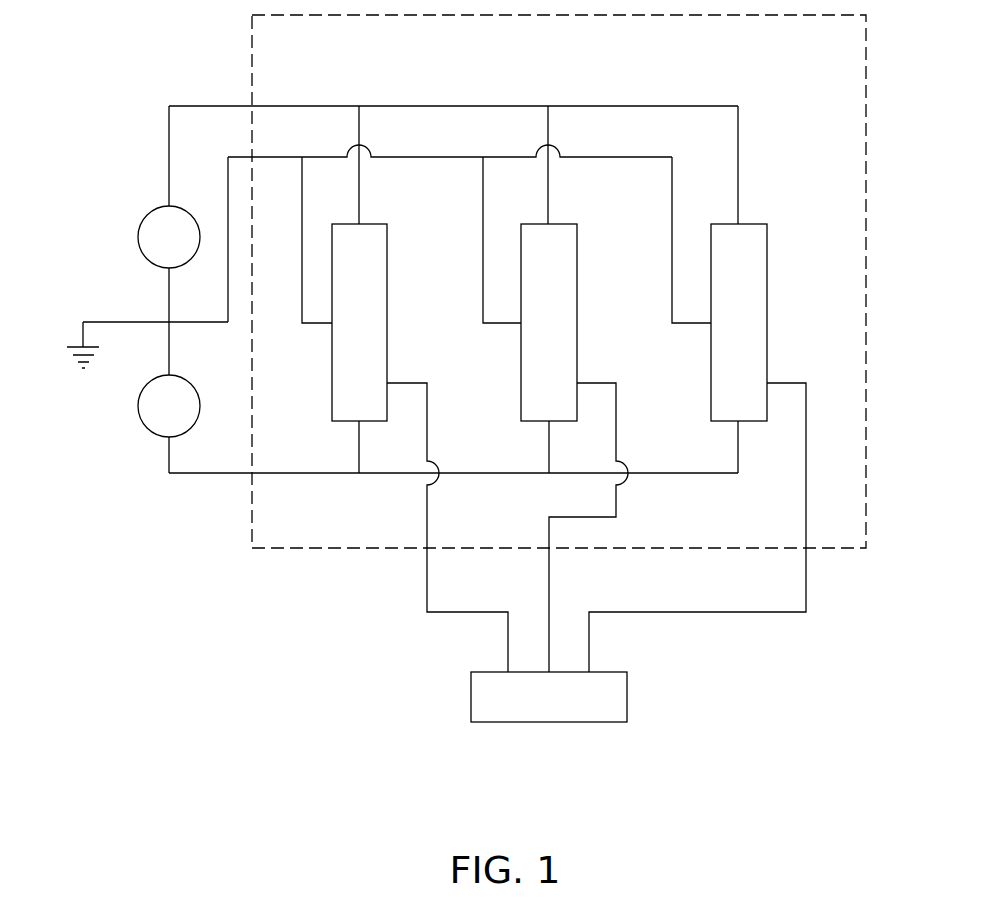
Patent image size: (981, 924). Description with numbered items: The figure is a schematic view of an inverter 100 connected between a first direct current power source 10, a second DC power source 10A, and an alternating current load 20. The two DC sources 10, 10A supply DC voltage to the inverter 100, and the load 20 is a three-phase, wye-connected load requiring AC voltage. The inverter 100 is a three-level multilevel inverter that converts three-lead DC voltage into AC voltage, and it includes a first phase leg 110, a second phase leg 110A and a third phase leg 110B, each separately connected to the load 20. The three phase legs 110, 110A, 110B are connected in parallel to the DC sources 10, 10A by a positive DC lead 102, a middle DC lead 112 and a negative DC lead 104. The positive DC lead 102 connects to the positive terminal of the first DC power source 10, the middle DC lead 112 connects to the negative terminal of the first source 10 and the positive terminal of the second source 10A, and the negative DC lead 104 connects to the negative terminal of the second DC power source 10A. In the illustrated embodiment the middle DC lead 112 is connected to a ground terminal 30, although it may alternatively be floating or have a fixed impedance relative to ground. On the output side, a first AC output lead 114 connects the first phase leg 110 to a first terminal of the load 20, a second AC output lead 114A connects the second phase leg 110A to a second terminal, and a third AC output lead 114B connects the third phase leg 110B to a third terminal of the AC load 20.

The first direct current power source 10 is at (136, 198).
The second DC power source 10A is at (136, 444).
The alternating current load 20 is at (565, 723).
The ground terminal 30 is at (147, 362).
The inverter 100 is at (310, 620).
The positive DC lead 102 is at (475, 106).
The negative DC lead 104 is at (300, 474).
The first phase leg 110 is at (388, 238).
The second phase leg 110A is at (578, 238).
The third phase leg 110B is at (768, 238).
The middle DC lead 112 is at (314, 323).
The first AC output lead 114 is at (455, 613).
The second AC output lead 114A is at (549, 585).
The third AC output lead 114B is at (715, 613).